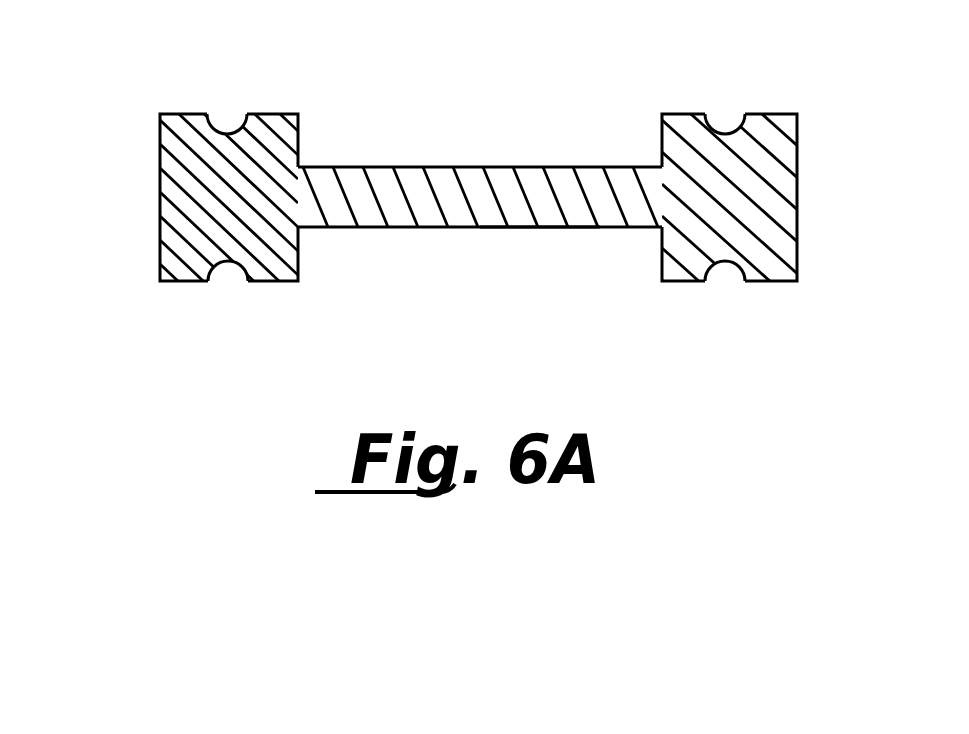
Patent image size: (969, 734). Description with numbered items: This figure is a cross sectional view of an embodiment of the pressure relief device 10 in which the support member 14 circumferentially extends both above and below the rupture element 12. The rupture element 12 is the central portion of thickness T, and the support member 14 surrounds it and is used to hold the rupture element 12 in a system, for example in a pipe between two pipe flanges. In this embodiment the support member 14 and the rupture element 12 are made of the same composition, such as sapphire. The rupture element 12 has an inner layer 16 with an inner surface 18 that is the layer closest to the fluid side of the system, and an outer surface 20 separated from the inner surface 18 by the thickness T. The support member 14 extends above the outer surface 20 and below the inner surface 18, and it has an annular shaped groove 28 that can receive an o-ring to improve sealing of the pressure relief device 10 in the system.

The pressure relief device 10 is at (481, 201).
The rupture element 12 is at (496, 195).
The support member 14 is at (192, 182).
The inner layer 16 is at (537, 205).
The inner surface 18 is at (403, 228).
The outer surface 20 is at (385, 167).
The annular shaped groove 28 is at (226, 128).